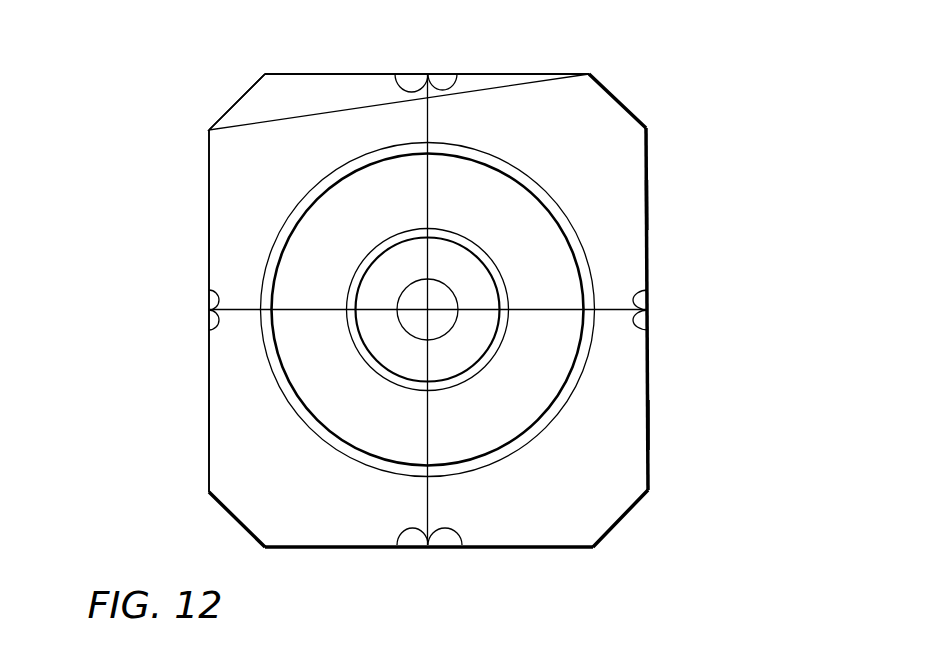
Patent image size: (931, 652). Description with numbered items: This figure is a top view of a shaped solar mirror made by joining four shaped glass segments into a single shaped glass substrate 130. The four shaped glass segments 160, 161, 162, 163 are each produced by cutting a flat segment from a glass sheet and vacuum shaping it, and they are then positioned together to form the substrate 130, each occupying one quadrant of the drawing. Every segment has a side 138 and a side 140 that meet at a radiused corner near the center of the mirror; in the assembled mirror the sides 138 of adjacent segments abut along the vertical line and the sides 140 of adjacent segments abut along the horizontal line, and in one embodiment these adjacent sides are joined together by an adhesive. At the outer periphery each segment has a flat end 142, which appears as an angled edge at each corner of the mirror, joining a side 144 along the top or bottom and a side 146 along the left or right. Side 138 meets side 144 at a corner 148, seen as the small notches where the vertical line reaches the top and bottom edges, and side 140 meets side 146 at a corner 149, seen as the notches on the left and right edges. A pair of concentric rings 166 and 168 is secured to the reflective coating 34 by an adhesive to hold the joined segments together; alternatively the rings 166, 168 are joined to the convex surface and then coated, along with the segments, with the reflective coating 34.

The reflective coating 34 is at (235, 462).
The shaped glass substrate 130 is at (692, 476).
The side 138 is at (425, 213).
The side 140 is at (303, 308).
The flat end 142 is at (233, 102).
The side 144 is at (327, 72).
The side 146 is at (207, 178).
The corner 148 is at (395, 74).
The corner 149 is at (209, 295).
The shaped glass segment 160 is at (207, 232).
The shaped glass segment 161 is at (207, 425).
The shaped glass segment 162 is at (650, 420).
The shaped glass segment 163 is at (632, 205).
The ring 166 is at (480, 245).
The ring 168 is at (540, 192).